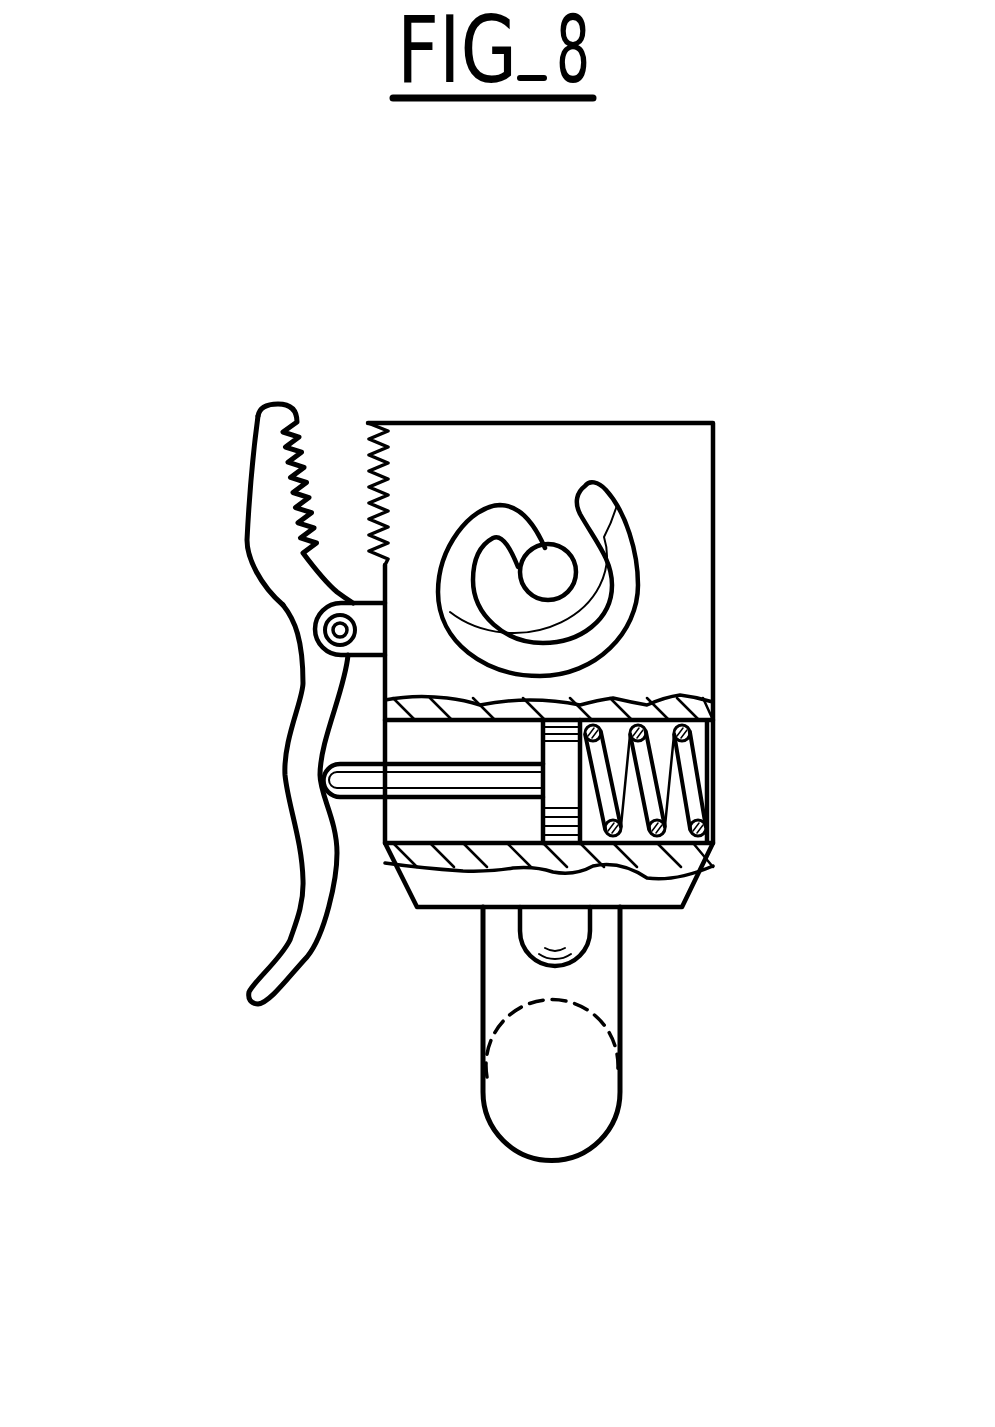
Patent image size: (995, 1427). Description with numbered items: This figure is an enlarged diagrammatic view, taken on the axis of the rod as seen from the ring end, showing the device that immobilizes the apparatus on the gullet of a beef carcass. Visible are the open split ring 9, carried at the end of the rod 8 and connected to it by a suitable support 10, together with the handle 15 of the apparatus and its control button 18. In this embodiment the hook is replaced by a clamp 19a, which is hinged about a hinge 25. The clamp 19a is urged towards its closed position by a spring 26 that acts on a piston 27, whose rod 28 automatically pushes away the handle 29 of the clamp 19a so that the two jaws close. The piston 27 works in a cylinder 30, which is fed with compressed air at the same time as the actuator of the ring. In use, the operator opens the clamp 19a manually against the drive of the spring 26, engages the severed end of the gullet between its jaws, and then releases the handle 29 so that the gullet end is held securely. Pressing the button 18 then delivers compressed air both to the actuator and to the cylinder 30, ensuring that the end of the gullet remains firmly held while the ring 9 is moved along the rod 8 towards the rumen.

The rod 8 is at (553, 562).
The split ring 9 is at (622, 580).
The support 10 is at (481, 518).
The handle 15 is at (587, 1098).
The control button 18 is at (570, 930).
The clamp 19a is at (277, 500).
The hinge 25 is at (330, 650).
The spring 26 is at (687, 768).
The piston 27 is at (562, 783).
The rod 28 is at (448, 785).
The handle 29 is at (300, 920).
The cylinder 30 is at (503, 817).